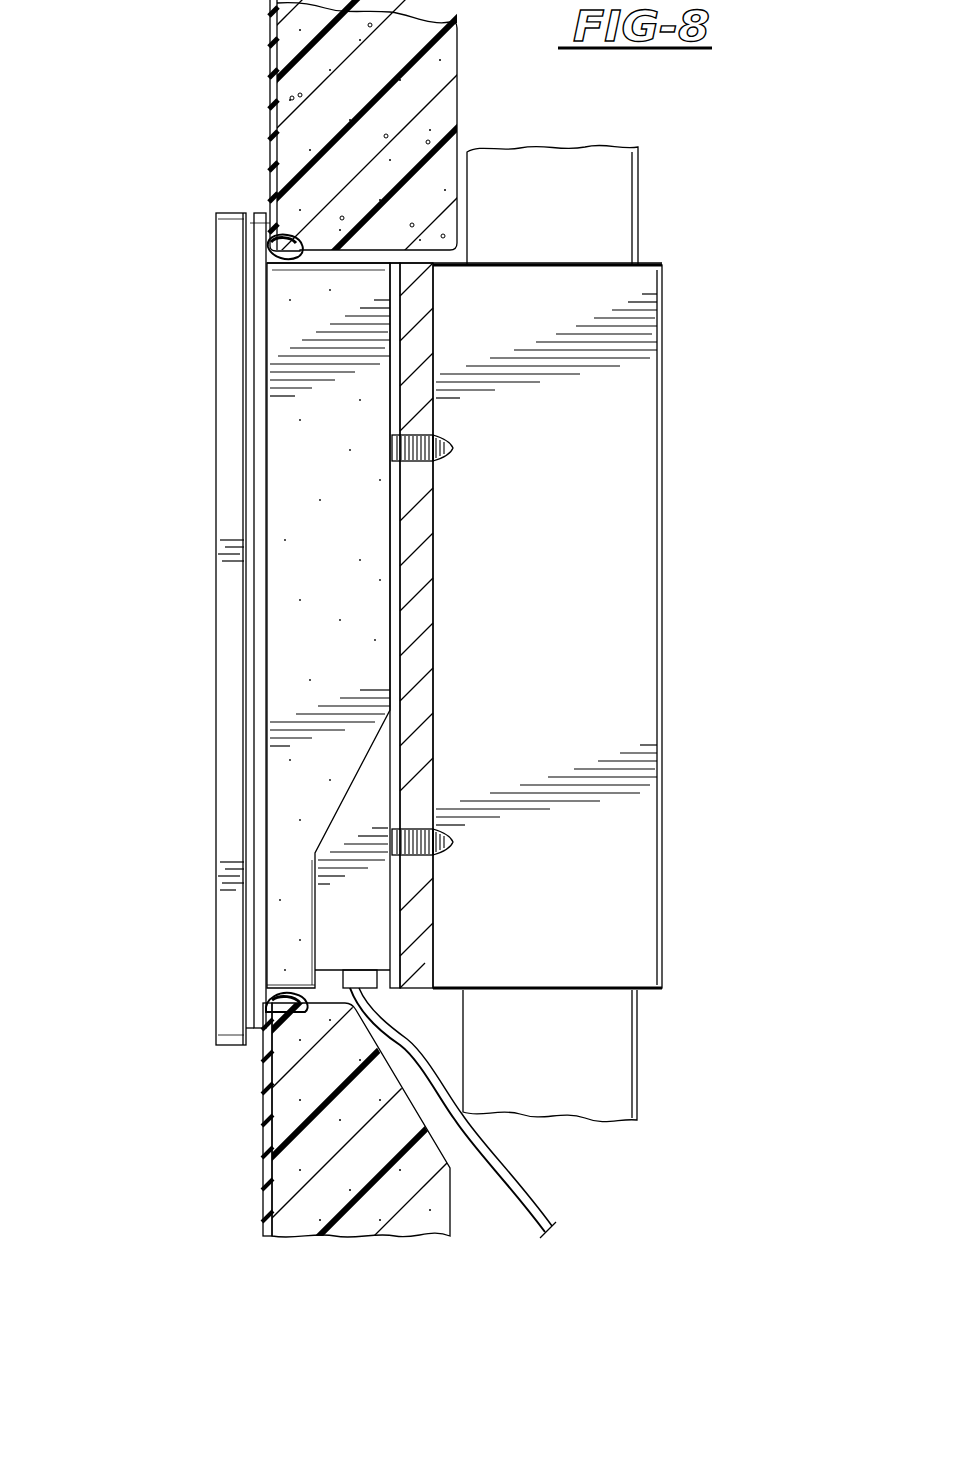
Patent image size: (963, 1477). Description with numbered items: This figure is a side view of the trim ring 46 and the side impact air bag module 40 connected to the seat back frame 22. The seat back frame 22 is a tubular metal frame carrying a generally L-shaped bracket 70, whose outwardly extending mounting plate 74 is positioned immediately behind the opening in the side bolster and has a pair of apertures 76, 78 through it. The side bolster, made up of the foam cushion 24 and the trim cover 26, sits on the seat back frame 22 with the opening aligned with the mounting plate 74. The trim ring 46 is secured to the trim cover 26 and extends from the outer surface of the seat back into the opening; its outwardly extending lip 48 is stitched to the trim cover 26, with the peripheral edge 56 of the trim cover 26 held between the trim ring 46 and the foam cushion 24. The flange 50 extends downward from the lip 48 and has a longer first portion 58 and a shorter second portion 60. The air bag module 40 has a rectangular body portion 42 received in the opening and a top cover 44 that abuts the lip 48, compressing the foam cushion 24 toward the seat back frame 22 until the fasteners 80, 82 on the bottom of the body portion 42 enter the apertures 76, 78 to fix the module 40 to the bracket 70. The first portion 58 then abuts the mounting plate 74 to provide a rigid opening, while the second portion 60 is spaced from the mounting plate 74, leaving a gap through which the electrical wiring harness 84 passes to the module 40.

The seat back frame 22 is at (620, 160).
The foam cushion 24 is at (390, 1228).
The trim cover 26 is at (262, 1166).
The side impact air bag module 40 is at (208, 518).
The body portion 42 is at (247, 262).
The top cover 44 is at (215, 1050).
The trim ring 46 is at (292, 683).
The lip 48 is at (260, 214).
The flange 50 is at (400, 342).
The peripheral edge 56 is at (283, 993).
The first portion 58 is at (396, 640).
The second portion 60 is at (318, 918).
The bracket 70 is at (695, 390).
The mounting plate 74 is at (642, 605).
The aperture 76 is at (435, 464).
The aperture 78 is at (433, 855).
The fastener 80 is at (453, 448).
The fastener 82 is at (448, 842).
The electrical wiring harness 84 is at (535, 1210).